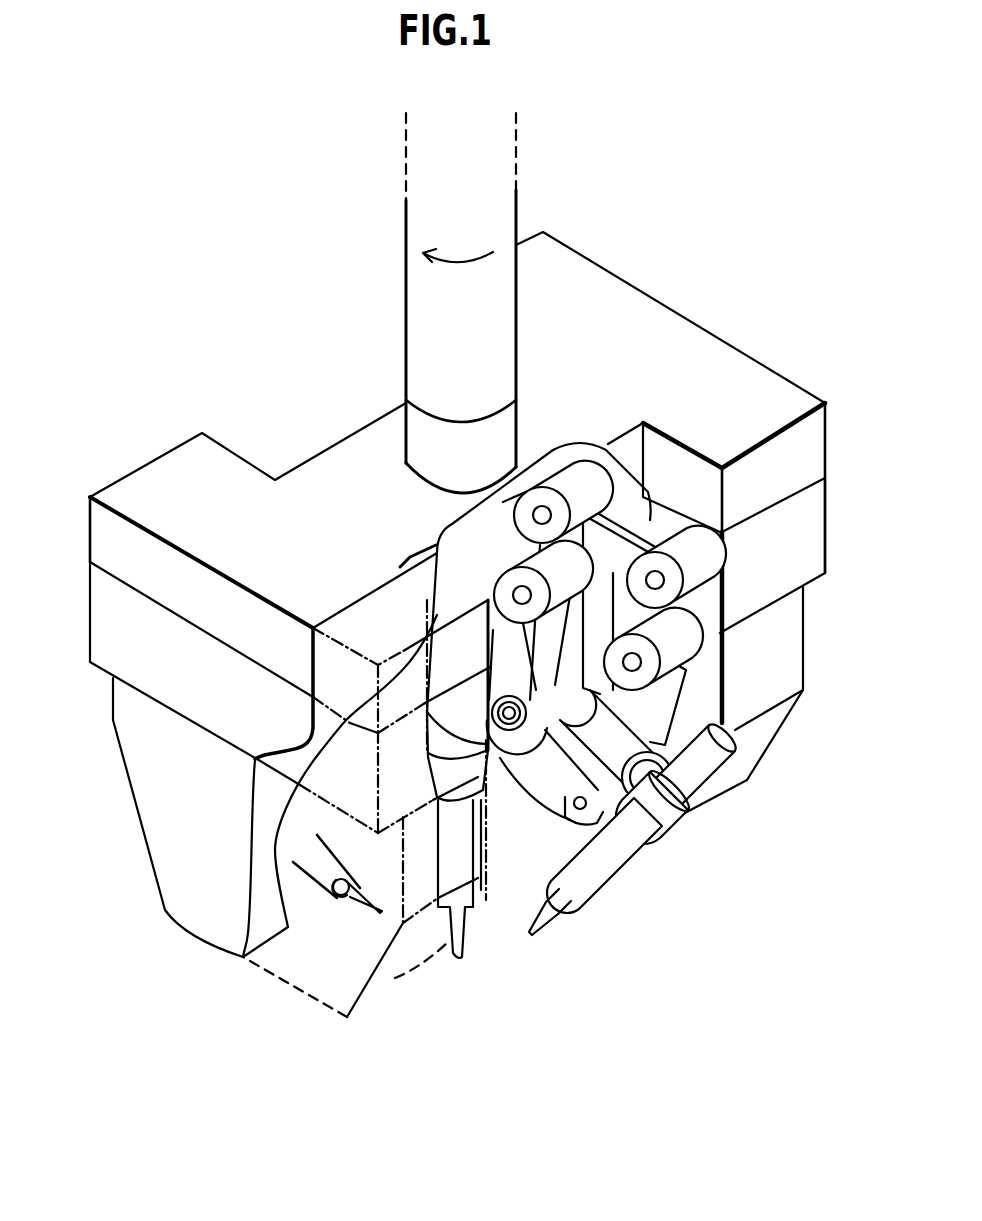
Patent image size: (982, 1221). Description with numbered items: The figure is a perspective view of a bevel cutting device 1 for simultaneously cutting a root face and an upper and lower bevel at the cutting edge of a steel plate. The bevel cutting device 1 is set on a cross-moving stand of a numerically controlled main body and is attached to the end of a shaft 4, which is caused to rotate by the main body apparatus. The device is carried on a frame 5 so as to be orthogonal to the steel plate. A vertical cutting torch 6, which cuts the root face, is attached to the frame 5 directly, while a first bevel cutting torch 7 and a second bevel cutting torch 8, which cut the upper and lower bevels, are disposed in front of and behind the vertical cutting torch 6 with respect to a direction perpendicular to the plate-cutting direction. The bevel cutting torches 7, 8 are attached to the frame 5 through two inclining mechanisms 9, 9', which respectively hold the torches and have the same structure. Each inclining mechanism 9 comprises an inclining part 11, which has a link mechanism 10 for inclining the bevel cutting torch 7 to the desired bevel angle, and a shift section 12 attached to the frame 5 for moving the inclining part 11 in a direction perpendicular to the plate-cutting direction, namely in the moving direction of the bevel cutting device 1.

The bevel cutting device 1 is at (838, 471).
The shaft 4 is at (413, 343).
The frame 5 is at (647, 312).
The vertical cutting torch 6 is at (463, 933).
The bevel cutting torch 7 is at (552, 933).
The bevel cutting torch 8 is at (363, 923).
The inclining mechanism 9 is at (797, 658).
The inclining mechanism 9' is at (364, 820).
The link mechanism 10 is at (696, 682).
The inclining part 11 is at (155, 842).
The shift section 12 is at (100, 628).